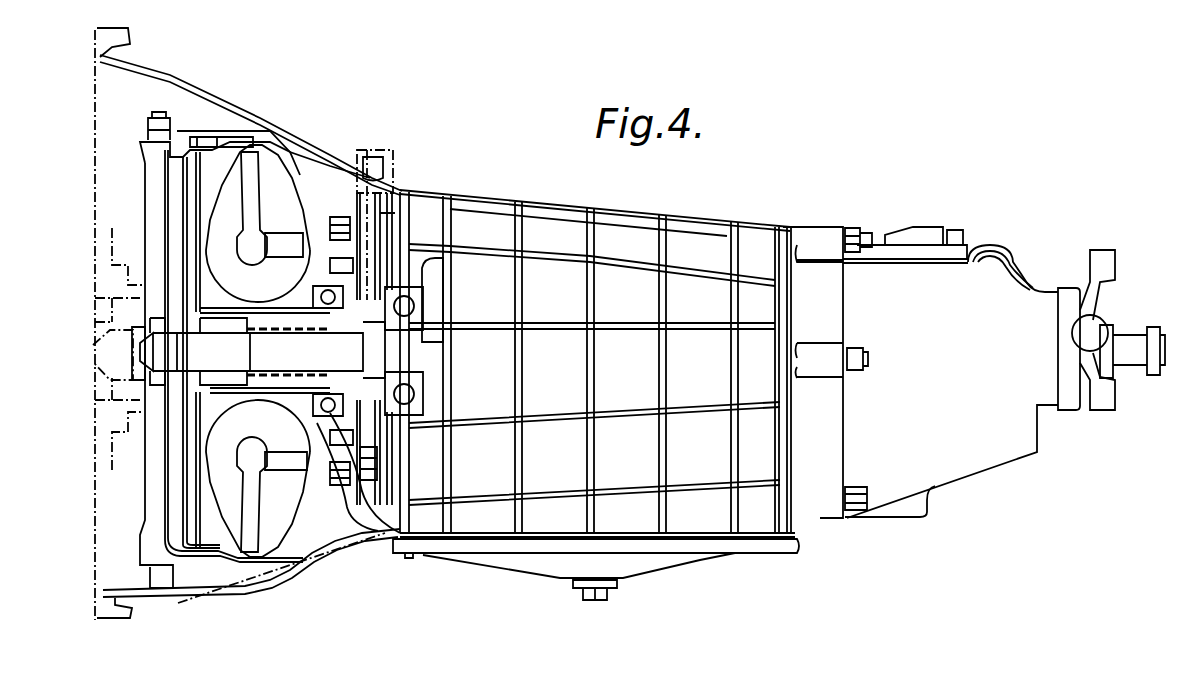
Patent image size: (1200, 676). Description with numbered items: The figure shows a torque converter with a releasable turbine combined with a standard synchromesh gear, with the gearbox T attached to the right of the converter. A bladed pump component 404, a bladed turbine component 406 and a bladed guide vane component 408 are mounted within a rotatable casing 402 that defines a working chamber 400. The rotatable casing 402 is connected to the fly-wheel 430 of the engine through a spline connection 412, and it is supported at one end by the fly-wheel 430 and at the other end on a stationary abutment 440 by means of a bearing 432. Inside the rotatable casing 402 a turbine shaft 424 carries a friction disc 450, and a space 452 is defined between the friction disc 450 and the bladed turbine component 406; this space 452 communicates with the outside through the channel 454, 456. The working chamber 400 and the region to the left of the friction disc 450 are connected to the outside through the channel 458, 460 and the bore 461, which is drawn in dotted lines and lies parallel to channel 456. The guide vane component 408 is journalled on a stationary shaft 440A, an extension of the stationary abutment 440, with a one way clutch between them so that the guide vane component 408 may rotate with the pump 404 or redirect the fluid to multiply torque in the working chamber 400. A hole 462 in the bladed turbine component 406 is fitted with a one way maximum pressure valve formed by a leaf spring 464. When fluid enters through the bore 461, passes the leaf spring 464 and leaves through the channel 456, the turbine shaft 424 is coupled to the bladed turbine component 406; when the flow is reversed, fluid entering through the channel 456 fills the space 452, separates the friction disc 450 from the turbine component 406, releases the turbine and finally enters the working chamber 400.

The working chamber 400 is at (250, 283).
The rotatable casing 402 is at (228, 135).
The bladed pump component 404 is at (277, 193).
The bladed turbine component 406 is at (188, 187).
The bladed guide vane component 408 is at (277, 240).
The spline connection 412 is at (187, 132).
The turbine shaft 424 is at (313, 366).
The fly-wheel 430 is at (140, 278).
The bearing 432 is at (328, 303).
The stationary abutment 440 is at (388, 198).
The stationary shaft 440A is at (385, 362).
The friction disc 450 is at (190, 173).
The space 452 is at (198, 215).
The channel 454 is at (367, 273).
The channel 456 is at (376, 156).
The channel 458 is at (253, 301).
The channel 460 is at (268, 320).
The bore 461 is at (378, 130).
The hole 462 is at (140, 367).
The leaf spring 464 is at (205, 300).
The transmission T is at (288, 140).